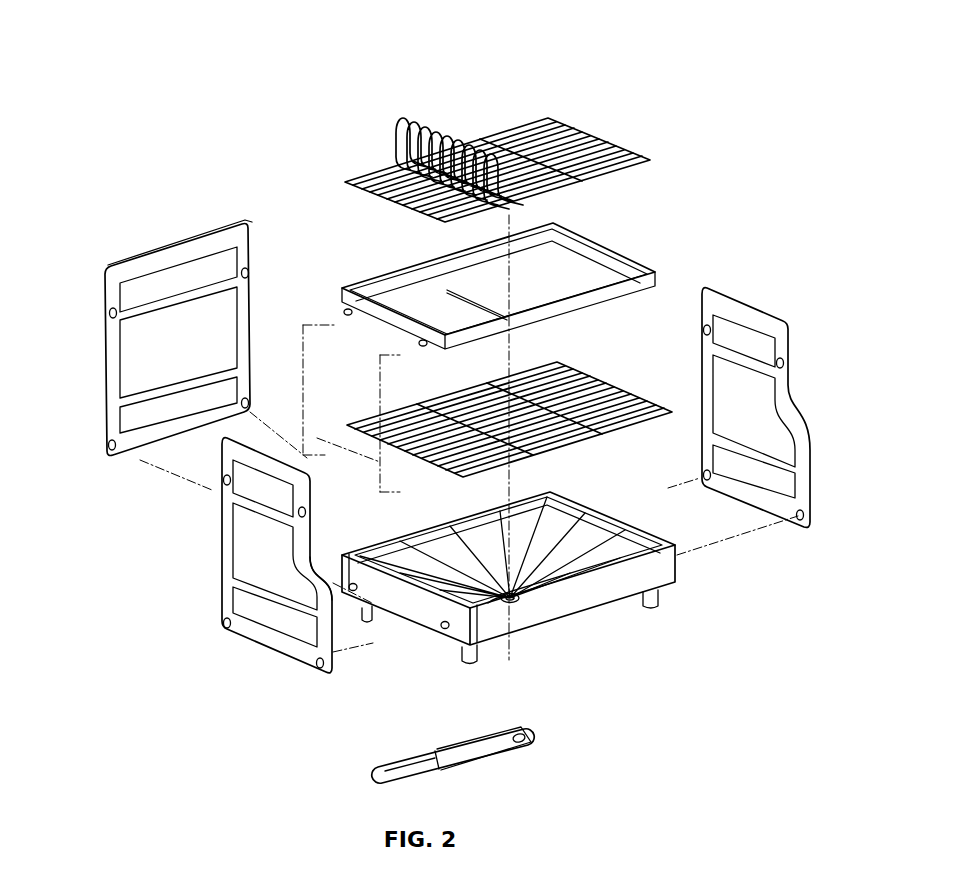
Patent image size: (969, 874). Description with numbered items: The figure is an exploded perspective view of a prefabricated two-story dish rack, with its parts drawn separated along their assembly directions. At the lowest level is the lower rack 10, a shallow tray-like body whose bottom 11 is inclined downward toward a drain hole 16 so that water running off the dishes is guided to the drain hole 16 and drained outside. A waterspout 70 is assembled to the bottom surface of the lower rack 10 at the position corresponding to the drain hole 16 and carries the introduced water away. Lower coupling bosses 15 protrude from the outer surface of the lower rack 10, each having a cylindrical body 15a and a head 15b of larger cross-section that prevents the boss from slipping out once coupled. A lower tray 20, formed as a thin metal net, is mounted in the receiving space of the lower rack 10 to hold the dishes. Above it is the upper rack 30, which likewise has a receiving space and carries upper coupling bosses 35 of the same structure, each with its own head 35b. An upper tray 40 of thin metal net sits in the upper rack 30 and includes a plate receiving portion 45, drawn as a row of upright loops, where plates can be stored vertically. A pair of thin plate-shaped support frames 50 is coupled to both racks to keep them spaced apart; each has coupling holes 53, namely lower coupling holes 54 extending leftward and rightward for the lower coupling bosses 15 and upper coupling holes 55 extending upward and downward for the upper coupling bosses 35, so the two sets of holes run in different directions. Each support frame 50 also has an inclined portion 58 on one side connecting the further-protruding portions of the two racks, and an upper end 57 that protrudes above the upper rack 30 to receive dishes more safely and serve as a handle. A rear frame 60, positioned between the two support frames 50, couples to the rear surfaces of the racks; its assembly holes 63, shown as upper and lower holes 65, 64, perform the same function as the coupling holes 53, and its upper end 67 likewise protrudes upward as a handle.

The lower rack 10 is at (509, 615).
The bottom 11 is at (567, 572).
The lower coupling boss 15 is at (503, 660).
The body 15a is at (457, 656).
The head 15b is at (443, 630).
The drain hole 16 is at (532, 617).
The lower tray 20 is at (632, 387).
The upper rack 30 is at (498, 254).
The upper coupling boss 35 is at (361, 271).
The head 35b is at (347, 287).
The upper tray 40 is at (542, 118).
The plate receiving portion 45 is at (415, 125).
The support frame 50 is at (241, 526).
The coupling holes 53 is at (221, 571).
The lower coupling hole 54 is at (222, 618).
The upper coupling hole 55 is at (222, 482).
The upper end 57 is at (270, 460).
The inclined portion 58 is at (314, 573).
The rear frame 60 is at (130, 302).
The assembly holes 63 is at (128, 359).
The lower coupling hole 64 is at (148, 421).
The upper coupling hole 65 is at (112, 320).
The upper end 67 is at (158, 253).
The waterspout 70 is at (383, 763).